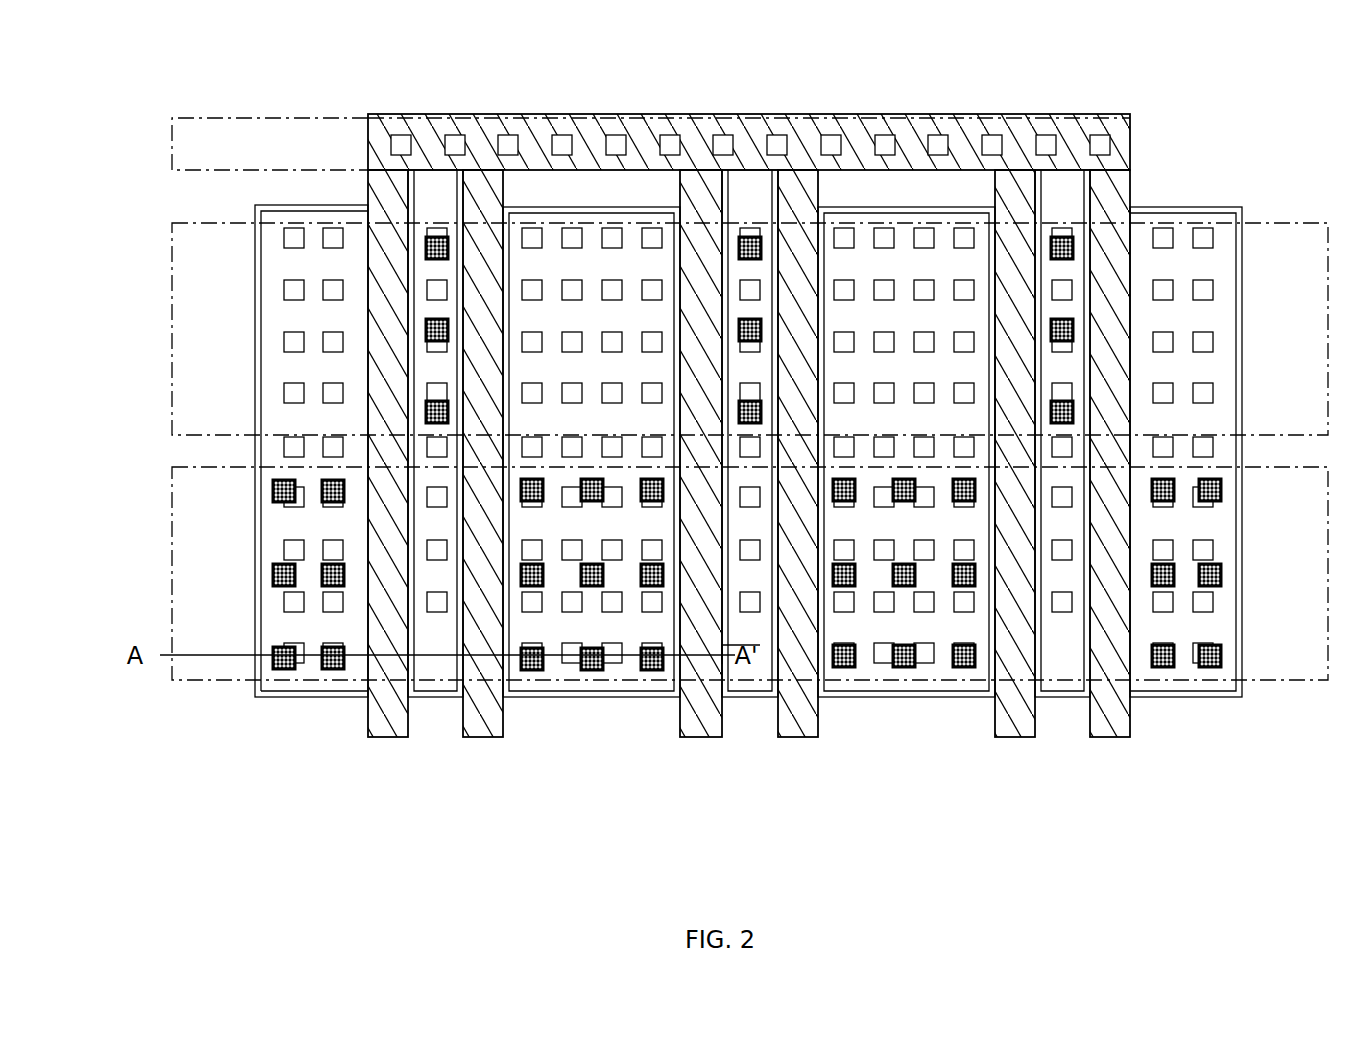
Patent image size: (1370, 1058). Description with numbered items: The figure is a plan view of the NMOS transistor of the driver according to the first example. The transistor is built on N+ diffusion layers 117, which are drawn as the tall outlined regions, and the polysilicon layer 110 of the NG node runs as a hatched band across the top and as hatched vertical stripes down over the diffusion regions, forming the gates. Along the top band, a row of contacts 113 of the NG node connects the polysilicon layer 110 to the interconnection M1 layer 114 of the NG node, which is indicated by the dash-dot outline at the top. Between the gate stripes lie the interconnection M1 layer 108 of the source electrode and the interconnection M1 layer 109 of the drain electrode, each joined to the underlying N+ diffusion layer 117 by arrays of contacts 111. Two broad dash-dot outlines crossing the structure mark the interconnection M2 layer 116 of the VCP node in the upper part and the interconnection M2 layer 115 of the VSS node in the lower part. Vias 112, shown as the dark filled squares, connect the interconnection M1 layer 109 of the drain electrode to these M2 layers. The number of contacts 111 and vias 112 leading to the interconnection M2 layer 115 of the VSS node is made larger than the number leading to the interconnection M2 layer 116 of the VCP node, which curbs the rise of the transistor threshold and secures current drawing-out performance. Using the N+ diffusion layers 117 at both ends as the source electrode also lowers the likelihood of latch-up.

The interconnection M1 layer of a source electrode 108 is at (315, 692).
The interconnection M1 layer of a drain electrode 109 is at (430, 692).
The polysilicon layer of the NG node 110 is at (1131, 182).
The contact 111 is at (284, 238).
The via 112 is at (1073, 247).
The contact of the NG node 113 is at (401, 125).
The interconnection M1 layer of the NG node 114 is at (203, 116).
The interconnection M2 layer of a VSS node 115 is at (228, 685).
The interconnection M2 layer of a VCP node 116 is at (200, 222).
The N+ diffusion layer 117 is at (260, 700).